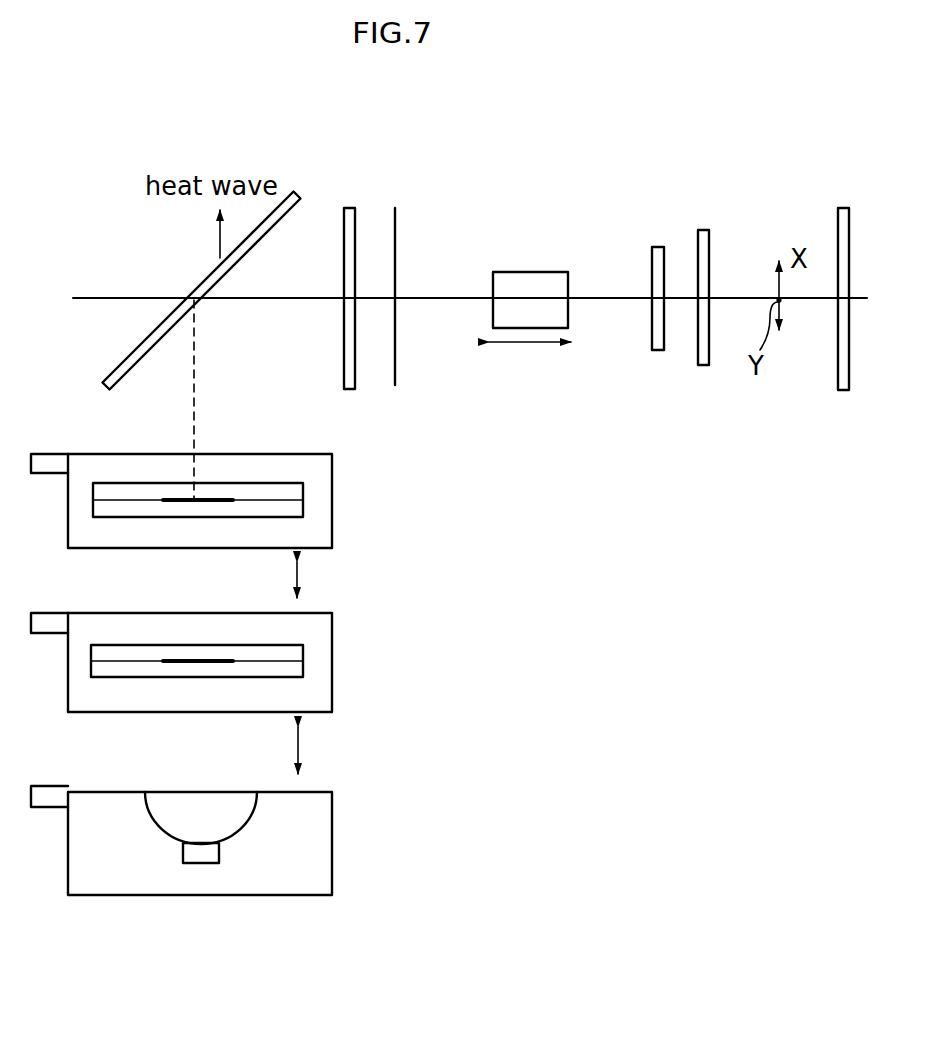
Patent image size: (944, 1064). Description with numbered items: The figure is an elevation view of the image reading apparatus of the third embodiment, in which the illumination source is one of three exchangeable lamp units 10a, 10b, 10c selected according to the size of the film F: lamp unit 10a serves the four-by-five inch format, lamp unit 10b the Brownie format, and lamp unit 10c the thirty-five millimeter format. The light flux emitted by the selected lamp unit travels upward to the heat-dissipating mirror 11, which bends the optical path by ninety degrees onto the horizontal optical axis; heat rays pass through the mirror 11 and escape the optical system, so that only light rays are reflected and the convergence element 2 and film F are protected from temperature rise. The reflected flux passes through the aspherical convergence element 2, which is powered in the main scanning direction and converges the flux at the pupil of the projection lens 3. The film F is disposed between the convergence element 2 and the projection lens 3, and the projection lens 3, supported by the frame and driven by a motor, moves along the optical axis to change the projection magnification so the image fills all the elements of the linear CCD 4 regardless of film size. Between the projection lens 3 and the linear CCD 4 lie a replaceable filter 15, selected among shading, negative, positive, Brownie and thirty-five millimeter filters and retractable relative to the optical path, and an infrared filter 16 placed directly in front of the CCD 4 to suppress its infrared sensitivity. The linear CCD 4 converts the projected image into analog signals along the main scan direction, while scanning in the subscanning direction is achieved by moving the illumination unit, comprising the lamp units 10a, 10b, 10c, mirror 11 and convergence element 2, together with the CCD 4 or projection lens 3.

The heat-dissipating mirror 11 is at (137, 343).
The aspherical convergence element 2 is at (343, 357).
The film F is at (395, 352).
The projection lens 3 is at (510, 272).
The replaceable filter 15 is at (652, 350).
The infrared filter 16 is at (703, 365).
The linear charge-coupled device 4 is at (838, 368).
The lamp unit 10a is at (332, 507).
The lamp unit 10b is at (332, 668).
The lamp unit 10c is at (332, 852).